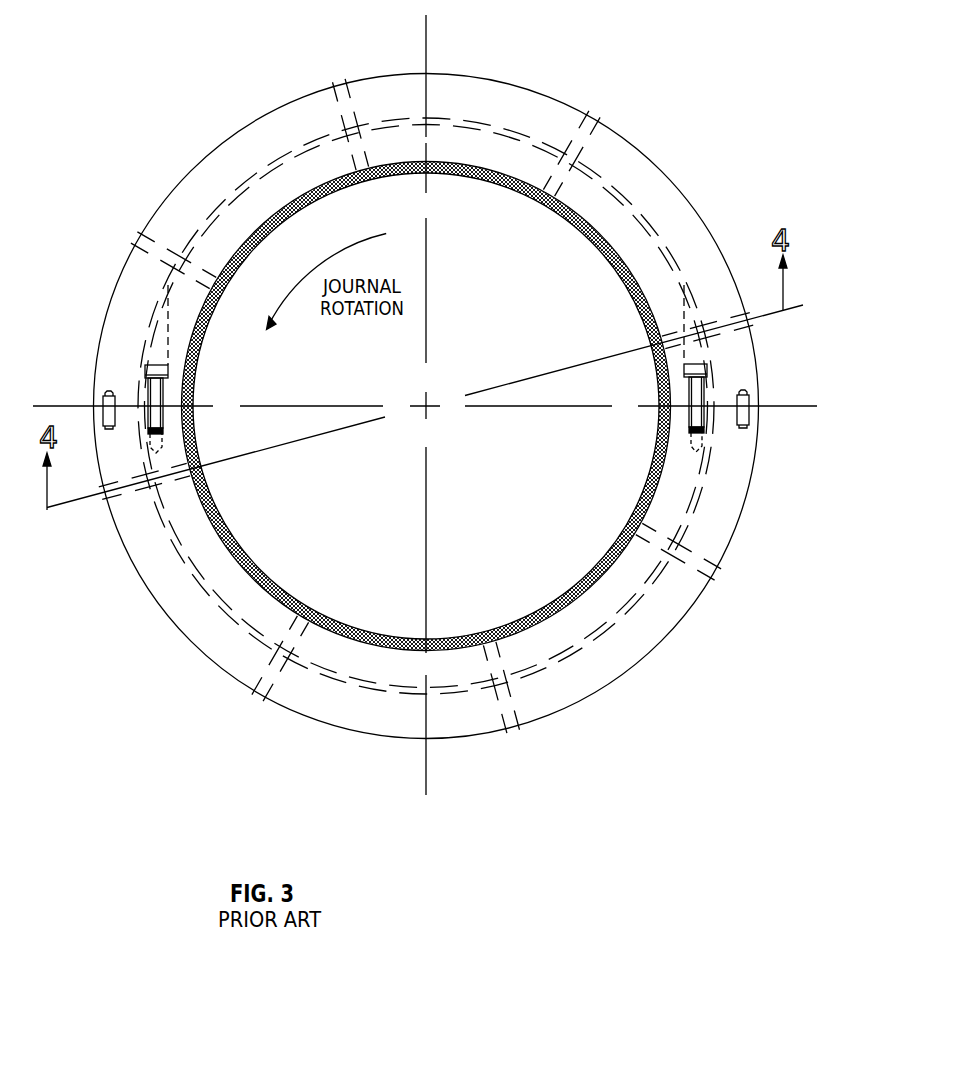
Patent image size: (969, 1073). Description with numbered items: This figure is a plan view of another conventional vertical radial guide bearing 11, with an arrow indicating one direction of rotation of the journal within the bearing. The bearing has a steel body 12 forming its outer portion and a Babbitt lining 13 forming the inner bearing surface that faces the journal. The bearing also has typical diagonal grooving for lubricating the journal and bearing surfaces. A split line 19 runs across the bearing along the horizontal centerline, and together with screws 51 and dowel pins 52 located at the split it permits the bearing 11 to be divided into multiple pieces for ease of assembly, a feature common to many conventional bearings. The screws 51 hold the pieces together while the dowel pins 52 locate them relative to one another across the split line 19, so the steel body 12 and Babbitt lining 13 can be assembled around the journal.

The vertical radial guide bearing 11 is at (568, 86).
The steel body 12 is at (703, 236).
The Babbitt lining 13 is at (605, 235).
The split line 19 is at (758, 400).
The screws 51 is at (150, 363).
The dowel pins 52 is at (747, 392).